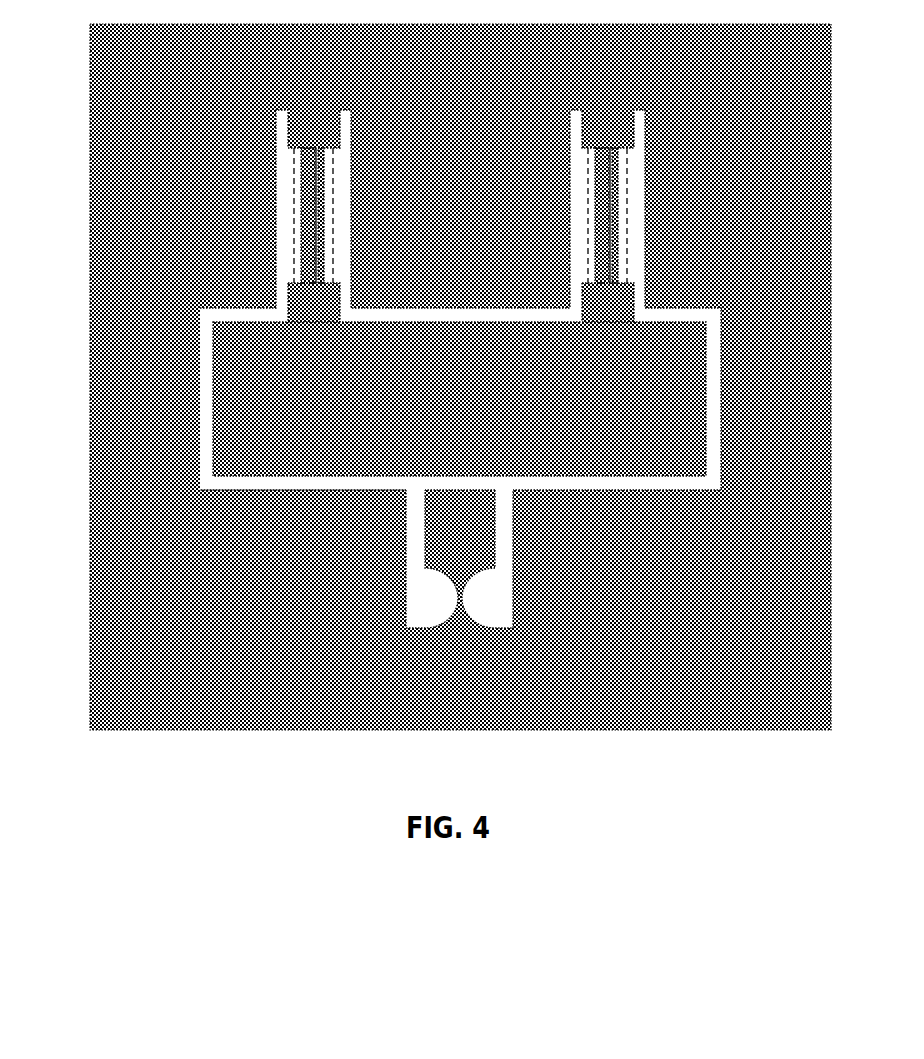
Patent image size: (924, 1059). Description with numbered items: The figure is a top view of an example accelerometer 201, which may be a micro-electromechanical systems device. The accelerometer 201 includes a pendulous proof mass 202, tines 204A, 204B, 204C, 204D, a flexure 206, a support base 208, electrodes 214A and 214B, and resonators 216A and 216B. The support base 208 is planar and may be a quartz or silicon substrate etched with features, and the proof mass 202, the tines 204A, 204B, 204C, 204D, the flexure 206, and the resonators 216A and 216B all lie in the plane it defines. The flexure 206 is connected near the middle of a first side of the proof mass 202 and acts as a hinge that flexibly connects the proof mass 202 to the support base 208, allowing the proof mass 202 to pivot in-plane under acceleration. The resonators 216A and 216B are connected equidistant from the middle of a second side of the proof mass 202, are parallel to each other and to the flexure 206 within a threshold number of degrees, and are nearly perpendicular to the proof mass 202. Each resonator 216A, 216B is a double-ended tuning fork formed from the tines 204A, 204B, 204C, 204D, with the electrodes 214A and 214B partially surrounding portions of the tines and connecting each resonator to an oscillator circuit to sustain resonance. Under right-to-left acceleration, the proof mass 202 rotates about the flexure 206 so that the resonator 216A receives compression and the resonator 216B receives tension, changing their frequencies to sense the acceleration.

The accelerometer 201 is at (822, 112).
The pendulous proof mass 202 is at (433, 413).
The tine 204A is at (302, 192).
The tine 204B is at (310, 192).
The tine 204C is at (597, 192).
The tine 204D is at (610, 187).
The flexure 206 is at (452, 590).
The support base 208 is at (438, 85).
The electrode 214A is at (323, 205).
The electrode 214B is at (618, 205).
The resonator 216A is at (255, 110).
The resonator 216B is at (656, 112).